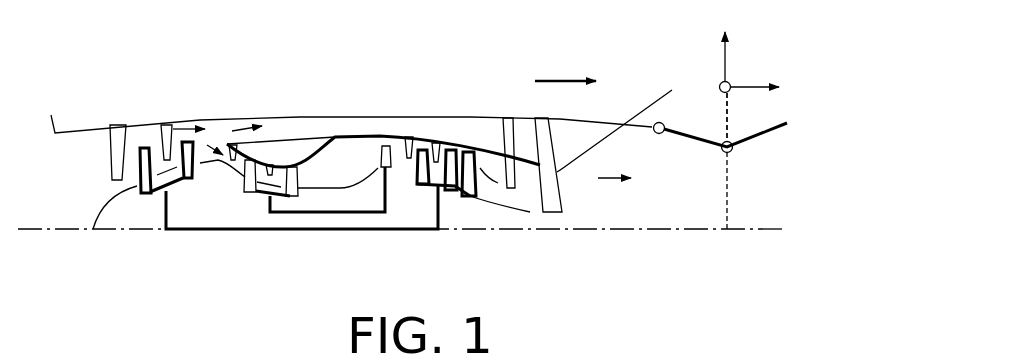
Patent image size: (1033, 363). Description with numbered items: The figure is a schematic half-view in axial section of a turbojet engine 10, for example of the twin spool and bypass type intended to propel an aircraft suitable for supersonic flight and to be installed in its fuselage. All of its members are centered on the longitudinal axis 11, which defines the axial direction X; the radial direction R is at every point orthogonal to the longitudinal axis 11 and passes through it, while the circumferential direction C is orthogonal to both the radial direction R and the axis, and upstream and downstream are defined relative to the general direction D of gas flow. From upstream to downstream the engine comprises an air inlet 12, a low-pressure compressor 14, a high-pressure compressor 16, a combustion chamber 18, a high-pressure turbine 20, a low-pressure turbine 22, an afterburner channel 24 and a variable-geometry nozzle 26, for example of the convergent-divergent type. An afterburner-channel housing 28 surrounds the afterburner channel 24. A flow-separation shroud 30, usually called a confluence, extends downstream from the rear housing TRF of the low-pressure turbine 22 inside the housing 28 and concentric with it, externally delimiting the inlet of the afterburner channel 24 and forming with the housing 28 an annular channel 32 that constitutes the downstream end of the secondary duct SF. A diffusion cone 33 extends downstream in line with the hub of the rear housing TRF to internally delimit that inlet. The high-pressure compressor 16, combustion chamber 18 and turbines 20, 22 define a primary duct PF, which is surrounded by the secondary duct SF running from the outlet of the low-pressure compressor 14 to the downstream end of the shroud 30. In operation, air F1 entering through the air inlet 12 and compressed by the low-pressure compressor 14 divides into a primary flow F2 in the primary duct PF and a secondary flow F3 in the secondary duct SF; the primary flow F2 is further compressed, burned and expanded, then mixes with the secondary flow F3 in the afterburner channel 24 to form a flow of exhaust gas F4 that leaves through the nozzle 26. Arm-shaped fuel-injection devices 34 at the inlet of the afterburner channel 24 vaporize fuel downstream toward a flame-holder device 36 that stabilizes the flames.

The turbojet engine 10 is at (210, 88).
The longitudinal axis 11 is at (735, 231).
The air inlet 12 is at (83, 178).
The low-pressure compressor 14 is at (135, 135).
The high-pressure compressor 16 is at (267, 150).
The combustion chamber 18 is at (348, 143).
The high-pressure turbine 20 is at (398, 145).
The low-pressure turbine 22 is at (452, 143).
The afterburner channel 24 is at (608, 222).
The variable-geometry nozzle 26 is at (688, 143).
The afterburner-channel housing 28 is at (564, 117).
The flow-separation shroud 30 is at (530, 168).
The annular channel 32 is at (523, 135).
The diffusion cone 33 is at (503, 198).
The fuel-injection devices 34 is at (493, 172).
The flame-holder device 36 is at (627, 122).
The air F1 is at (183, 128).
The primary flow F2 is at (208, 152).
The secondary flow F3 is at (237, 130).
The flow of exhaust gas F4 is at (612, 183).
The secondary duct SF is at (315, 127).
The primary duct PF is at (279, 180).
The rear housing TRF is at (461, 178).
The general direction of flow D is at (567, 78).
The radial direction R is at (725, 49).
The axial direction X is at (765, 86).
The circumferential direction C is at (714, 117).